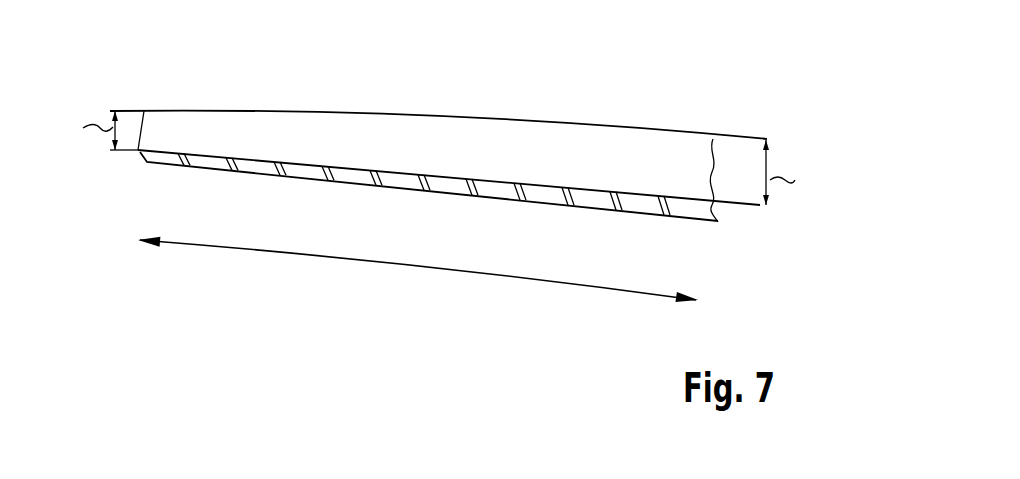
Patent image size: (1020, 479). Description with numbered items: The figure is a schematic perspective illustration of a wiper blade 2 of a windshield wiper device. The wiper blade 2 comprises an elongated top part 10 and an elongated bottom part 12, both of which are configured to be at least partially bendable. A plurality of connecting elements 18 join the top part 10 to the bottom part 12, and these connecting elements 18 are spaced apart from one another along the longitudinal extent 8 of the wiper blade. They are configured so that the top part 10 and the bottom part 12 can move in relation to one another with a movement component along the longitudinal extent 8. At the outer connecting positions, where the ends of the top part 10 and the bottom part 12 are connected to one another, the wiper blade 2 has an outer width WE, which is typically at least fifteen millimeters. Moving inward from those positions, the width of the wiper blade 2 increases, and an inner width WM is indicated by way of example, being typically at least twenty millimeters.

The wiper blade 2 is at (375, 89).
The elongated top part 10 is at (565, 121).
The elongated bottom part 12 is at (607, 208).
The connecting elements 18 is at (425, 181).
The longitudinal extent 8 is at (413, 268).
The outer width WE is at (93, 132).
The inner width WM is at (799, 172).